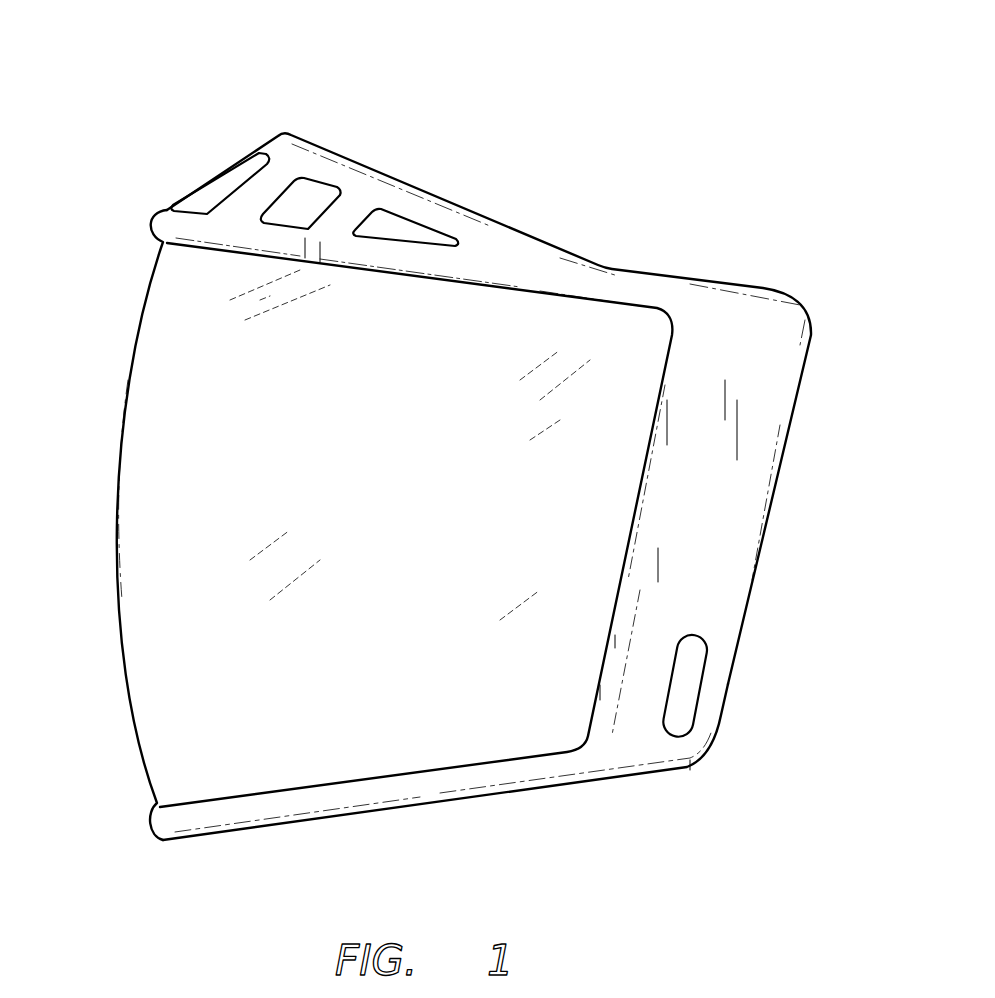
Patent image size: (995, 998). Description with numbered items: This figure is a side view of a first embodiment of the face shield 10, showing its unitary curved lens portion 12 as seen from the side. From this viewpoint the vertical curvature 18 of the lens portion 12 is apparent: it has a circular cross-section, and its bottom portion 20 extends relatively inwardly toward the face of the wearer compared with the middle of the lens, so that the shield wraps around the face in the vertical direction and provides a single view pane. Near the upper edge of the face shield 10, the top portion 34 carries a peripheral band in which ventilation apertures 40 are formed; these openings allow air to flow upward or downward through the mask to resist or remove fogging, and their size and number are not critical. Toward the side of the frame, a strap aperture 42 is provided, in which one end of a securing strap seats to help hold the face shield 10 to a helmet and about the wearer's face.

The face shield 10 is at (428, 424).
The lens portion 12 is at (393, 612).
The vertical curvature 18 is at (117, 537).
The bottom portion 20 is at (153, 803).
The top portion 34 is at (438, 426).
The ventilation apertures 40 is at (227, 177).
The strap aperture 42 is at (685, 685).